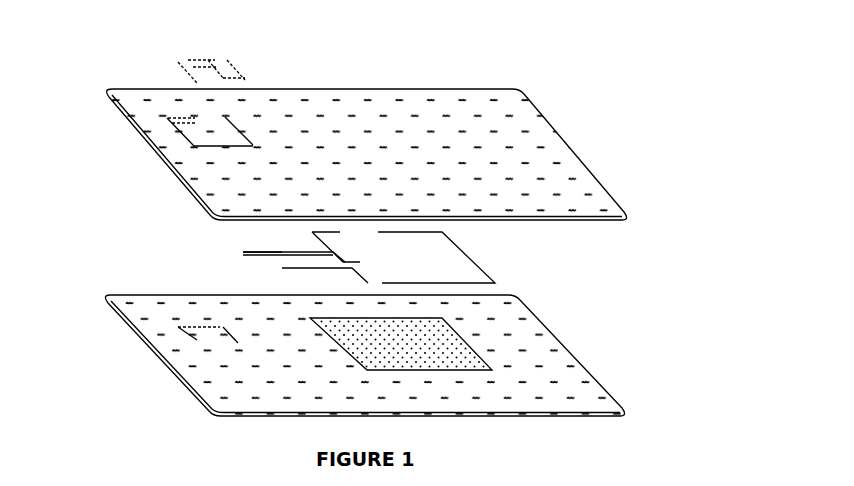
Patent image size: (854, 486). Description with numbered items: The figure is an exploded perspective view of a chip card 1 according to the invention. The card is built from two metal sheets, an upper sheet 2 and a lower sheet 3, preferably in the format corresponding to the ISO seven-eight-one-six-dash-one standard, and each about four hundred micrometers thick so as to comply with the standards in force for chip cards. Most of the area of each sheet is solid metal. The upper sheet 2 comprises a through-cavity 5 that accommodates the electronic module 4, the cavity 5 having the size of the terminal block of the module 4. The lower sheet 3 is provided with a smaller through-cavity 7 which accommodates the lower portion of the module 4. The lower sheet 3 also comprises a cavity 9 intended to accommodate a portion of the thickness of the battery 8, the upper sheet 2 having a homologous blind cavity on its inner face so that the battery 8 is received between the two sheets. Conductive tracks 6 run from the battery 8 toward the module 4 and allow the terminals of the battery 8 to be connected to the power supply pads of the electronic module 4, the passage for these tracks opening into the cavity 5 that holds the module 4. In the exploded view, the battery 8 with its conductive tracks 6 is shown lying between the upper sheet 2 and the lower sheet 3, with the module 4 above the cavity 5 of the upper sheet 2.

The chip card 1 is at (722, 191).
The upper metal sheet 2 is at (526, 100).
The lower metal sheet 3 is at (587, 370).
The electronic module 4 is at (190, 69).
The through-cavity 5 is at (200, 132).
The conductive tracks 6 is at (172, 236).
The through-cavity 7 is at (203, 338).
The battery 8 is at (452, 260).
The cavity 9 is at (447, 350).